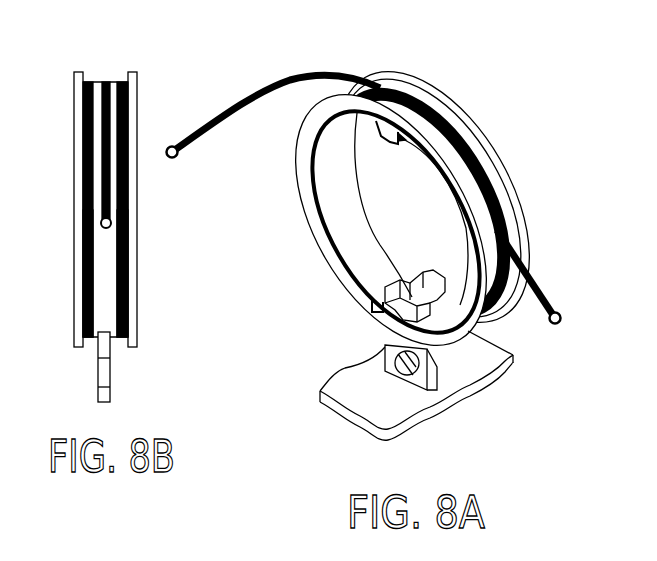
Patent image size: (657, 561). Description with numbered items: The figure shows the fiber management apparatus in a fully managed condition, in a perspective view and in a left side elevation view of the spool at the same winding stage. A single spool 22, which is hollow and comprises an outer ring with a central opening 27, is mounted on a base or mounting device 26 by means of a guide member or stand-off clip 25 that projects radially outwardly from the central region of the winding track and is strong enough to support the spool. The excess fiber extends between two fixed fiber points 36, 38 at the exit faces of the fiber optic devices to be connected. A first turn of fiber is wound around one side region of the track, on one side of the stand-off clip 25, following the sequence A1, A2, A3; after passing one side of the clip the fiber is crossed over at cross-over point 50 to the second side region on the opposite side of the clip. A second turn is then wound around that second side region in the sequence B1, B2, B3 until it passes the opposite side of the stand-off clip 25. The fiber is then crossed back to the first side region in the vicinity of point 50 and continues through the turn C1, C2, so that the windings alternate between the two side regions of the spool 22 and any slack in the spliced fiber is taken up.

In FIG. 8A, the spool 22 is at (500, 145).
In FIG. 8A, the cross-over point 50 is at (420, 97).
In FIG. 8B, the guide member or stand-off clip 25 is at (105, 372).
In FIG. 8A, the guide member or stand-off clip 25 is at (430, 377).
In FIG. 8A, the base or mounting device 26 is at (503, 363).
In FIG. 8A, the central opening 27 is at (412, 212).
In FIG. 8B, the fixed fiber point 36 is at (112, 225).
In FIG. 8A, the fixed fiber point 36 is at (175, 158).
In FIG. 8A, the fixed fiber point 38 is at (562, 314).
In FIG. 8B, the first turn sequence portion A1 is at (100, 136).
In FIG. 8A, the first turn sequence portion A1 is at (282, 80).
In FIG. 8A, the first turn sequence portion A2 is at (497, 198).
In FIG. 8B, the first turn sequence portion A3 is at (83, 279).
In FIG. 8B, the second turn sequence portion B1 is at (83, 144).
In FIG. 8A, the second turn sequence portion B2 is at (482, 247).
In FIG. 8B, the second turn sequence portion B3 is at (128, 277).
In FIG. 8B, the third turn portion C1 is at (128, 142).
In FIG. 8A, the third turn portion C2 is at (530, 268).